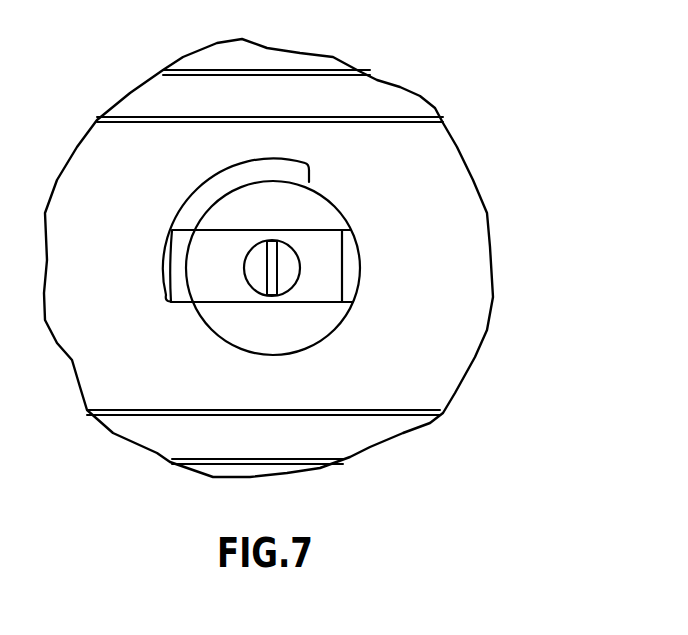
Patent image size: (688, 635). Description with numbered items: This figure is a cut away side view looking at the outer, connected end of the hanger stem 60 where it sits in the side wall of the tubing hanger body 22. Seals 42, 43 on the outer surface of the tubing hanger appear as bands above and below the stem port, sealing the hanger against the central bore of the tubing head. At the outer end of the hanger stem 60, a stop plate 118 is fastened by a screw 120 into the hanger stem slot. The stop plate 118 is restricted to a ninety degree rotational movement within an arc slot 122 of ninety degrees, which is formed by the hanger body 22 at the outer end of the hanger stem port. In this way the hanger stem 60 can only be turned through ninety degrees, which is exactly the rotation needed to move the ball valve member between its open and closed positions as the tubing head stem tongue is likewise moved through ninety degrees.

The tubing hanger body 22 is at (447, 347).
The seal 42 is at (390, 100).
The seal 43 is at (363, 437).
The hanger stem 60 is at (313, 211).
The stop plate 118 is at (195, 278).
The screw 120 is at (287, 277).
The arc slot 122 is at (290, 174).